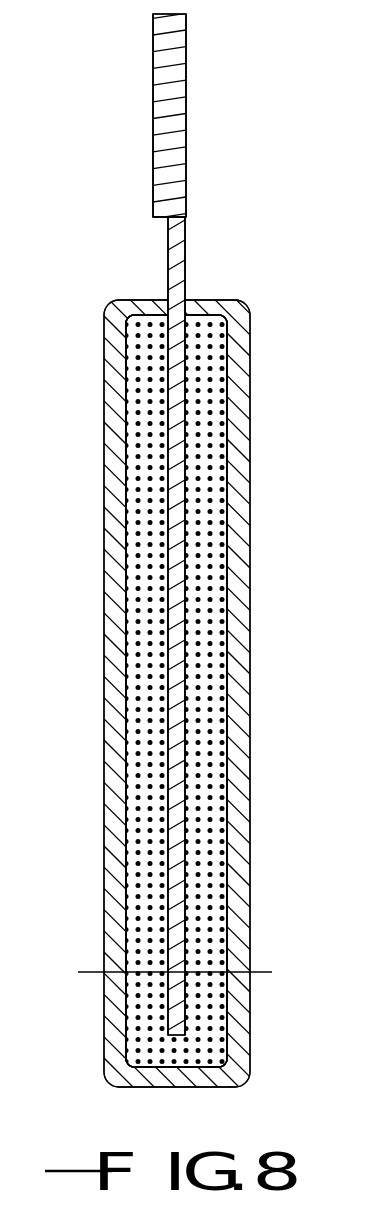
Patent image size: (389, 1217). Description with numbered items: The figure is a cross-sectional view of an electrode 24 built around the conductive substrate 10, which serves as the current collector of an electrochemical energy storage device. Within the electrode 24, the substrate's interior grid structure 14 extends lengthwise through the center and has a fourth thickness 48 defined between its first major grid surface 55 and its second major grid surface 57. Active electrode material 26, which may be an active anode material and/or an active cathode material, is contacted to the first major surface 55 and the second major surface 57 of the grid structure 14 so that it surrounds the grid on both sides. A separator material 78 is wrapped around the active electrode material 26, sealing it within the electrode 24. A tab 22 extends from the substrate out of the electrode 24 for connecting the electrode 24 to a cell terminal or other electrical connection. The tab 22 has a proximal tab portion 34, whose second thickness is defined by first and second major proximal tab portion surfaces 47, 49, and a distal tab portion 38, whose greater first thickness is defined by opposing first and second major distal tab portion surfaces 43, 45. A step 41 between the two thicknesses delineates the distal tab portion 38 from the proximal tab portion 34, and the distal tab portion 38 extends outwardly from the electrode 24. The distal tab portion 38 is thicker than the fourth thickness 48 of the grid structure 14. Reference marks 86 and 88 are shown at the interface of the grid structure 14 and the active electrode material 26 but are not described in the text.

The conductive substrate 10 is at (185, 237).
The grid structure 14 is at (167, 797).
The tab 22 is at (130, 136).
The electrode 24 is at (250, 686).
The active electrode material 26 is at (205, 566).
The proximal tab portion 34 is at (185, 267).
The distal tab portion 38 is at (163, 93).
The step 41 is at (153, 217).
The first major distal tab portion surface 43 is at (146, 179).
The second major distal tab portion surface 45 is at (195, 132).
The first major proximal tab portion surface 47 is at (160, 267).
The fourth thickness 48 is at (190, 972).
The second major proximal tab portion surface 49 is at (194, 286).
The first major grid surface 55 is at (168, 685).
The second major grid surface 57 is at (187, 762).
The separator material 78 is at (250, 360).
The interface region 86 is at (185, 457).
The interface region 88 is at (168, 600).